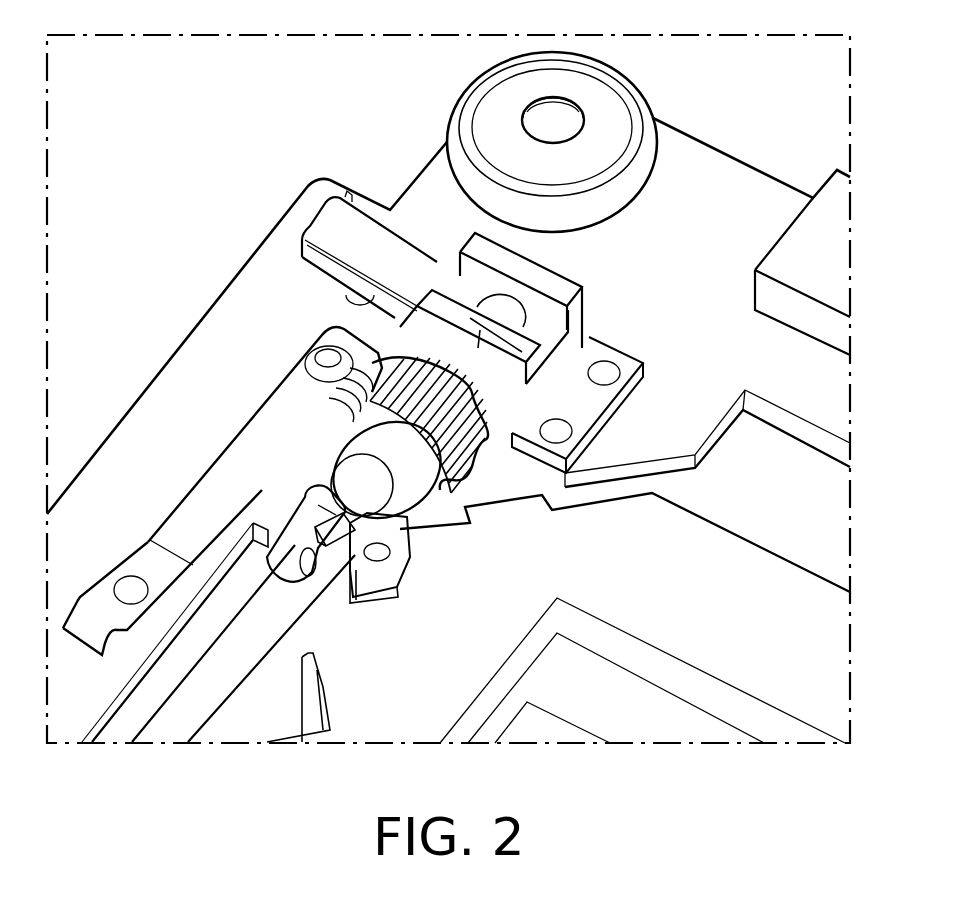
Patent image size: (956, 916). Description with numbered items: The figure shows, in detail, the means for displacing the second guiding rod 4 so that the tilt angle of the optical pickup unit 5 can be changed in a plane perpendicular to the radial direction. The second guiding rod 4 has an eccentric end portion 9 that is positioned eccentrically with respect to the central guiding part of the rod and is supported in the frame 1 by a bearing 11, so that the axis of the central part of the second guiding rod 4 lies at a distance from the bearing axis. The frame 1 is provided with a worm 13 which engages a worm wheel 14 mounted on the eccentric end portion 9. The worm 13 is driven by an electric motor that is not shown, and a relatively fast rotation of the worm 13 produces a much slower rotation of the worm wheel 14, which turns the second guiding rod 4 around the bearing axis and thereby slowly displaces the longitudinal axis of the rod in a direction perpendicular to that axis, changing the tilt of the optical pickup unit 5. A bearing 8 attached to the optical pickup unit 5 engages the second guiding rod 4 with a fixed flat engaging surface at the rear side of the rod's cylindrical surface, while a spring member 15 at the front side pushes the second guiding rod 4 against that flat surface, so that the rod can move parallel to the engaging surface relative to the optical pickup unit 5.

The frame 1 is at (735, 193).
The second guiding rod 4 is at (213, 687).
The optical pickup unit 5 is at (715, 608).
The bearing 8 is at (290, 495).
The end portion 9 is at (443, 473).
The bearing 11 is at (478, 348).
The worm 13 is at (282, 390).
The worm wheel 14 is at (463, 450).
The spring member 15 is at (285, 530).